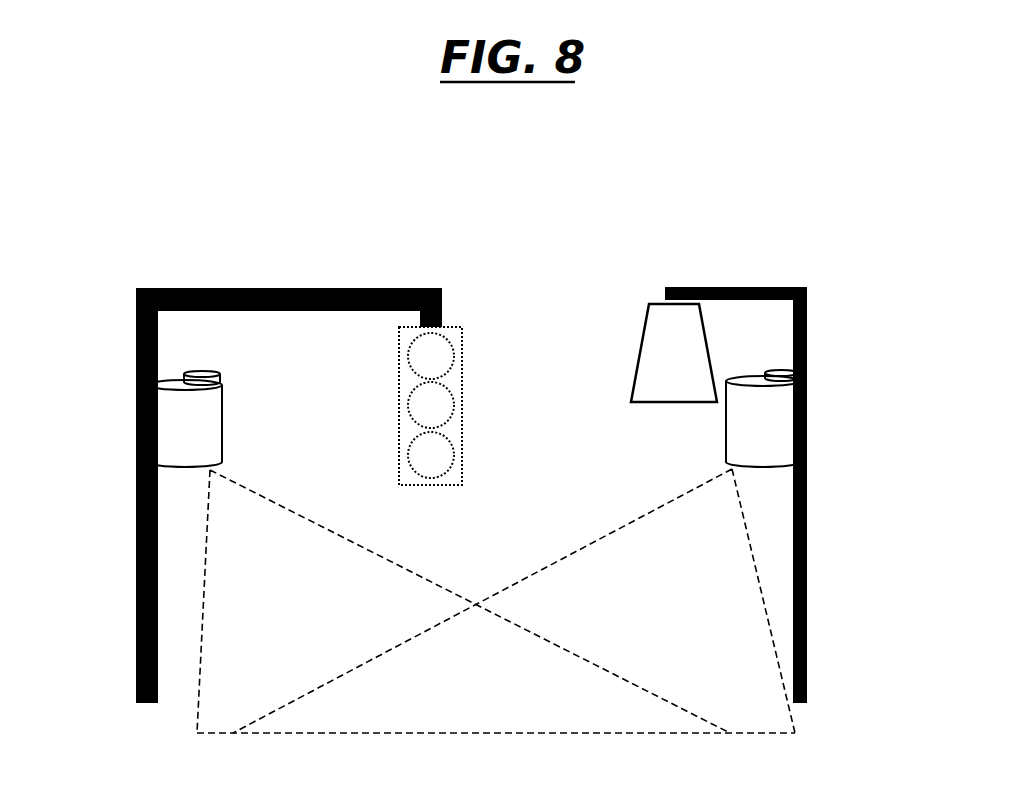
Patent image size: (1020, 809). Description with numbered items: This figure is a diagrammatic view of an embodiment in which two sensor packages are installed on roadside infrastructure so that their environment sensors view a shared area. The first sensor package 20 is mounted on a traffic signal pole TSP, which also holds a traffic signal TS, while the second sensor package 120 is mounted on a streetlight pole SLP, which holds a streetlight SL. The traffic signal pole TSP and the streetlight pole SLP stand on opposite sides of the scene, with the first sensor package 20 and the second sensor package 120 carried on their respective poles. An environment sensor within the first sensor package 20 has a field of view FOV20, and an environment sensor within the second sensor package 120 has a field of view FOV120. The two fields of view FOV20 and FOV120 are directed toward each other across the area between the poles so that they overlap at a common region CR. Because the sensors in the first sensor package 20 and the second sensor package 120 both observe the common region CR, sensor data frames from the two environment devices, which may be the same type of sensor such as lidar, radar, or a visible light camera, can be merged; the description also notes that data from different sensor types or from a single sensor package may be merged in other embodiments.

The first sensor package 20 is at (196, 437).
The second sensor package 120 is at (781, 439).
The traffic signal pole TSP is at (136, 338).
The streetlight pole SLP is at (807, 628).
The traffic signal TS is at (398, 397).
The streetlight SL is at (640, 368).
The field of view FOV20 is at (303, 518).
The field of view FOV120 is at (625, 525).
The common region CR is at (477, 709).